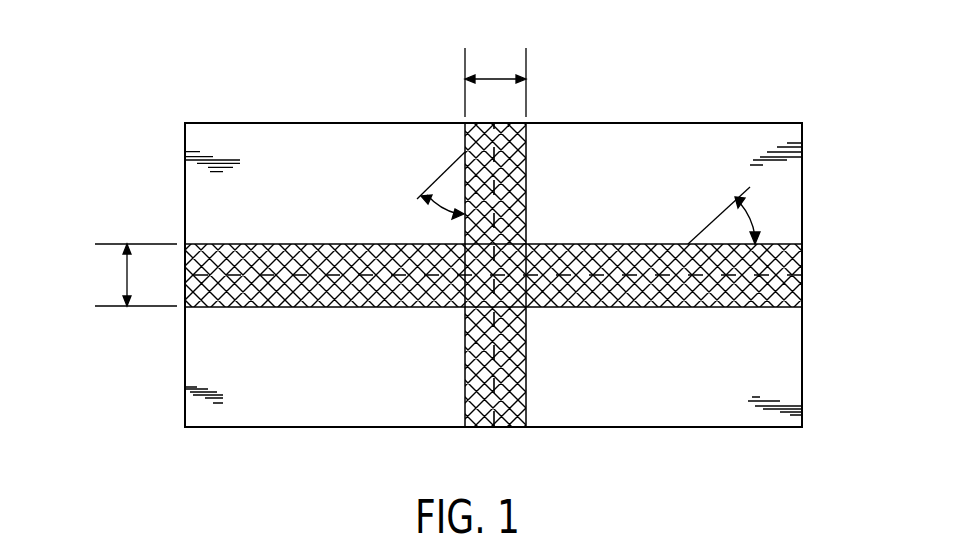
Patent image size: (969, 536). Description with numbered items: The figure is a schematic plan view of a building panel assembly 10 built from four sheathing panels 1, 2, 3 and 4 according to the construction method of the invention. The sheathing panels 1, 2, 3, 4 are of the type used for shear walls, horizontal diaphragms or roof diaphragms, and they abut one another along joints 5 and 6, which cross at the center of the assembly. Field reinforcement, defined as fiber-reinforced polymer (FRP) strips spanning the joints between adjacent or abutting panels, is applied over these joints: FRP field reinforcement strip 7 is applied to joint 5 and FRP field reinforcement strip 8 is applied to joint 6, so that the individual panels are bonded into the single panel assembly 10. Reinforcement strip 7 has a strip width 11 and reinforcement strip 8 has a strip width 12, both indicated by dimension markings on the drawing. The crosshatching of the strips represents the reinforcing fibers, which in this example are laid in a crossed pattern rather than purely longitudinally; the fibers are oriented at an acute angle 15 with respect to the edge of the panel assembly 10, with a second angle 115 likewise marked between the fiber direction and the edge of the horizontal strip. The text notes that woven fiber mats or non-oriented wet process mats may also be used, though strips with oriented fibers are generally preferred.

The panel assembly 10 is at (314, 88).
The sheathing panel 1 is at (668, 178).
The sheathing panel 2 is at (325, 178).
The sheathing panel 3 is at (325, 365).
The sheathing panel 4 is at (637, 367).
The joint 5 is at (688, 287).
The joint 6 is at (507, 360).
The FRP field reinforcement strip 7 is at (620, 236).
The FRP field reinforcement strip 8 is at (534, 193).
The strip width 11 is at (120, 272).
The strip width 12 is at (490, 72).
The acute angle 15 is at (441, 197).
The cut angle 115 is at (737, 215).